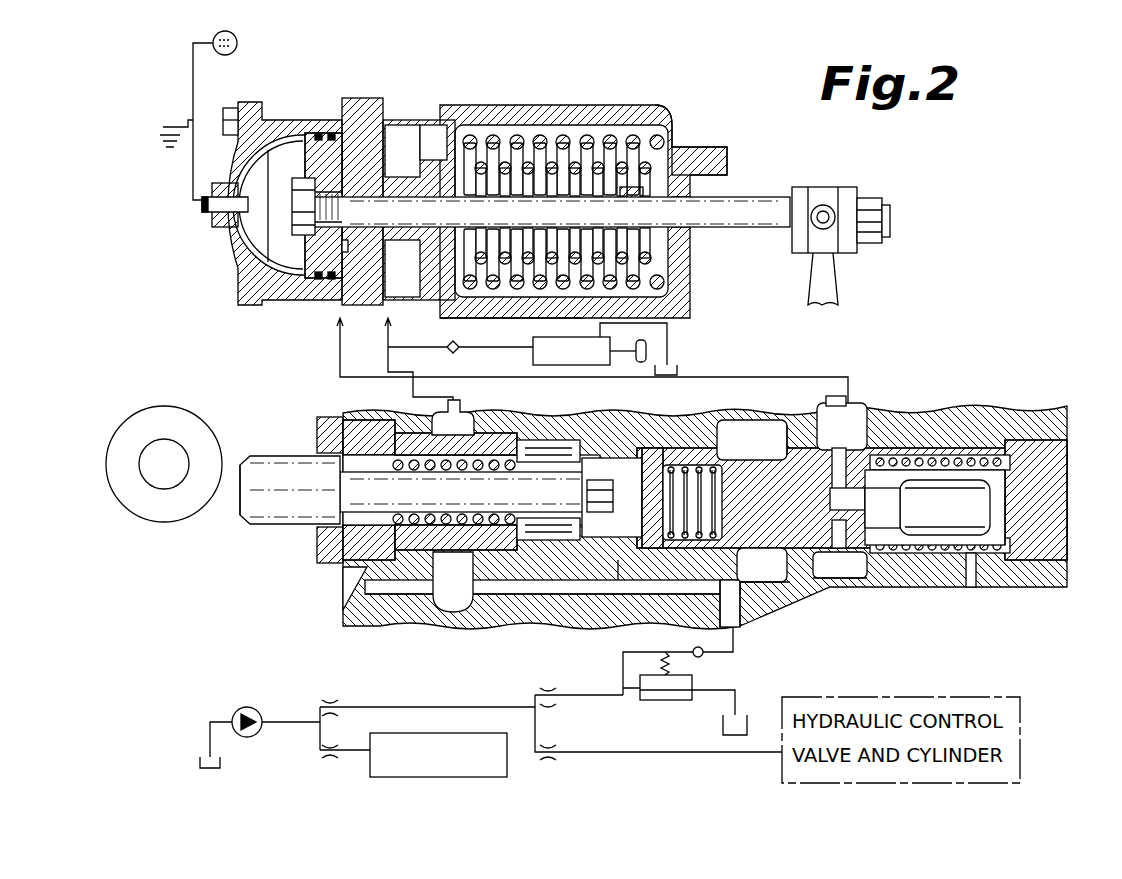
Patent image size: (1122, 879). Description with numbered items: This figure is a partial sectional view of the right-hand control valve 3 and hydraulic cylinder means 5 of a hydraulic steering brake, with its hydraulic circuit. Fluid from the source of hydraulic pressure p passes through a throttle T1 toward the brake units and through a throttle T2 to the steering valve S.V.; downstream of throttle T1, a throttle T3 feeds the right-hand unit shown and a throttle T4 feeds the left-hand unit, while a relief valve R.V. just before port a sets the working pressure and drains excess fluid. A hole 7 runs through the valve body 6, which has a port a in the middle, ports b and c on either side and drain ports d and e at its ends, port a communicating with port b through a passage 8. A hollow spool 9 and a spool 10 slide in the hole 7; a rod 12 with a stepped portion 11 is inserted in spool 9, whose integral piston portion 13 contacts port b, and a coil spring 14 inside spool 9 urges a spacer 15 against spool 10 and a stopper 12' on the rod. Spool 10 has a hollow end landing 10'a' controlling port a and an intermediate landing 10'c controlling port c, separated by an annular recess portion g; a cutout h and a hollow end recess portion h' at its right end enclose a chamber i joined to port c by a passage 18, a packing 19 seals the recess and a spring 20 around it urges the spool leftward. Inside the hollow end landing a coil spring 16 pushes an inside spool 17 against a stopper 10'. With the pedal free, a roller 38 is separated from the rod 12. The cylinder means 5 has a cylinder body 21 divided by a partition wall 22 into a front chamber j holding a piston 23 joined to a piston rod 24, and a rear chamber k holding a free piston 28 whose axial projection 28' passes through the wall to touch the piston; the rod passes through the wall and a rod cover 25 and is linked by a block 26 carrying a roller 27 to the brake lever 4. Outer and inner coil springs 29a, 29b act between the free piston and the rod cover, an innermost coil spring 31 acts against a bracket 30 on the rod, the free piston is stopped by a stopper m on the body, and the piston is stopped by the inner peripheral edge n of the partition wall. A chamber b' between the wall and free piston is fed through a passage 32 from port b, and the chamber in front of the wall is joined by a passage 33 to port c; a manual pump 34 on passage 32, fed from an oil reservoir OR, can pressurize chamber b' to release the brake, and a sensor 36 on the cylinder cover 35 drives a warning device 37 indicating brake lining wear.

The control valve 3 is at (303, 445).
The brake lever 4 is at (838, 288).
The hydraulic cylinder means 5 is at (219, 239).
The valve body 6 is at (609, 587).
The hole 7 is at (500, 595).
The passage 8 is at (525, 594).
The hollow spool 9 is at (362, 426).
The spool 10 is at (705, 517).
The stopper 10' is at (635, 516).
The hollow end landing 10'a' is at (788, 610).
The intermediate landing 10'c is at (847, 610).
The stepped portion 11 is at (300, 512).
The rod 12 is at (282, 508).
The stopper 12' is at (565, 517).
The piston portion 13 is at (387, 555).
The coil spring 14 is at (415, 530).
The spacer 15 is at (592, 515).
The coil spring 16 is at (668, 468).
The inside spool 17 is at (720, 590).
The passage 18 is at (790, 430).
The packing 19 is at (919, 509).
The spring 20 is at (920, 553).
The cylinder body 21 is at (470, 105).
The partition wall 22 is at (360, 98).
The piston 23 is at (322, 155).
The piston rod 24 is at (768, 197).
The rod cover 25 is at (700, 175).
The block 26 is at (852, 187).
The roller 27 is at (823, 205).
The free piston 28 is at (419, 177).
The axial projection 28' is at (402, 157).
The outer coil spring 29a is at (666, 118).
The inner coil spring 29b is at (568, 178).
The bracket 30 is at (630, 199).
The innermost coil spring 31 is at (518, 180).
The passage 32 is at (455, 396).
The passage 33 is at (367, 377).
The manual pump 34 is at (548, 337).
The cylinder cover 35 is at (238, 258).
The sensor 36 is at (238, 212).
The warning device 37 is at (238, 43).
The roller 38 is at (188, 519).
The port a is at (732, 420).
The port b is at (458, 498).
The chamber b' is at (402, 268).
The port c is at (854, 575).
The drain port d is at (340, 580).
The drain port e is at (971, 587).
The intermediate annular recess portion g is at (790, 560).
The cutout h is at (940, 590).
The hollow end recess portion h' is at (940, 421).
The chamber i is at (870, 509).
The front chamber j is at (280, 264).
The rear chamber k is at (520, 300).
The stopper m is at (436, 124).
The inner peripheral edge n is at (333, 122).
The oil reservoir OR is at (682, 368).
The source of hydraulic pressure p is at (255, 707).
The throttle T1 is at (336, 698).
The throttle T2 is at (333, 760).
The throttle T3 is at (540, 690).
The throttle T4 is at (546, 762).
The steering valve S.V. is at (400, 738).
The relief valve R.V. is at (662, 702).